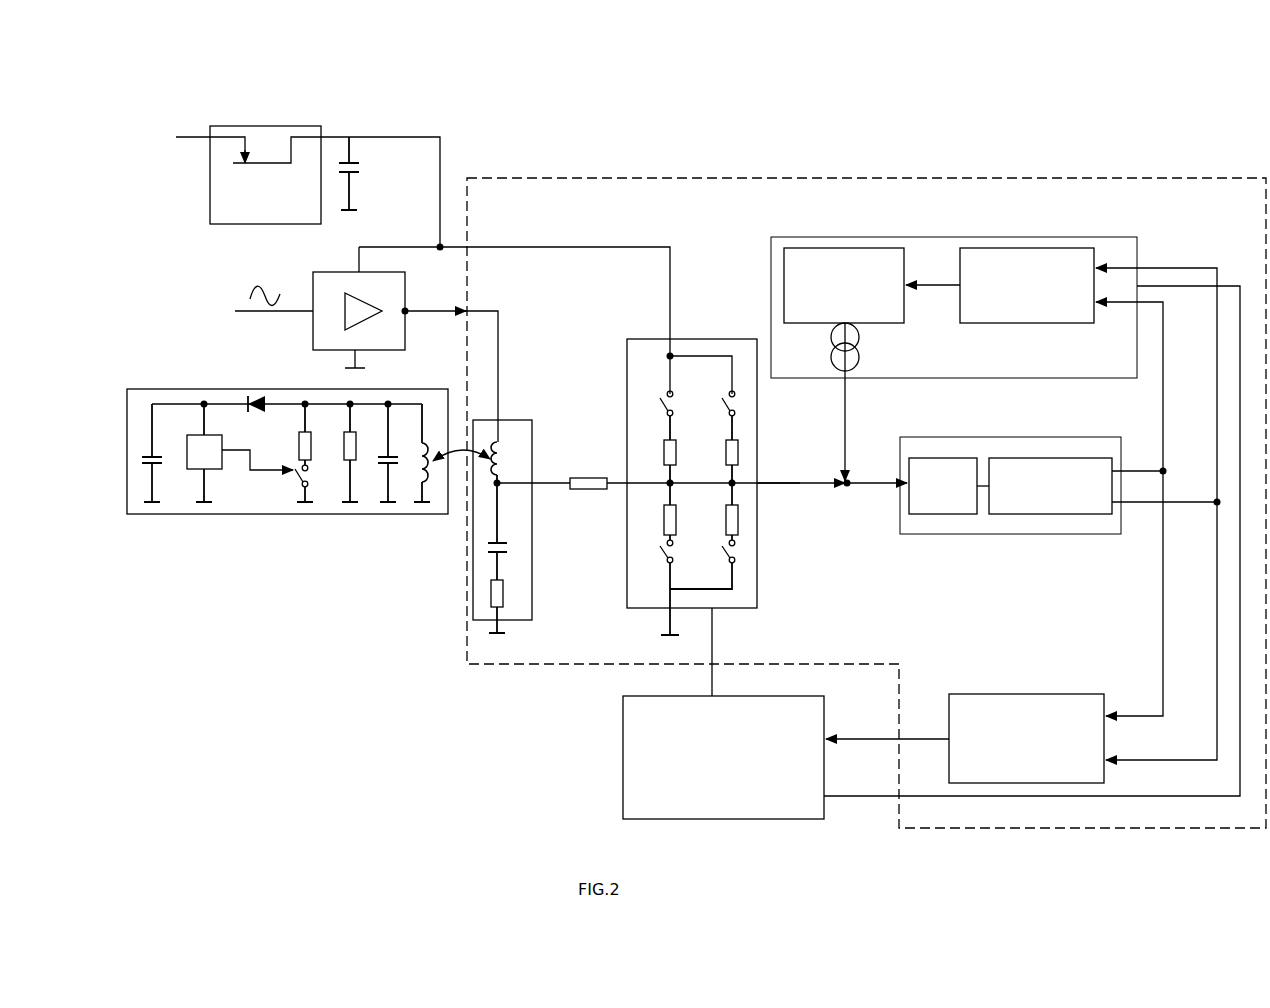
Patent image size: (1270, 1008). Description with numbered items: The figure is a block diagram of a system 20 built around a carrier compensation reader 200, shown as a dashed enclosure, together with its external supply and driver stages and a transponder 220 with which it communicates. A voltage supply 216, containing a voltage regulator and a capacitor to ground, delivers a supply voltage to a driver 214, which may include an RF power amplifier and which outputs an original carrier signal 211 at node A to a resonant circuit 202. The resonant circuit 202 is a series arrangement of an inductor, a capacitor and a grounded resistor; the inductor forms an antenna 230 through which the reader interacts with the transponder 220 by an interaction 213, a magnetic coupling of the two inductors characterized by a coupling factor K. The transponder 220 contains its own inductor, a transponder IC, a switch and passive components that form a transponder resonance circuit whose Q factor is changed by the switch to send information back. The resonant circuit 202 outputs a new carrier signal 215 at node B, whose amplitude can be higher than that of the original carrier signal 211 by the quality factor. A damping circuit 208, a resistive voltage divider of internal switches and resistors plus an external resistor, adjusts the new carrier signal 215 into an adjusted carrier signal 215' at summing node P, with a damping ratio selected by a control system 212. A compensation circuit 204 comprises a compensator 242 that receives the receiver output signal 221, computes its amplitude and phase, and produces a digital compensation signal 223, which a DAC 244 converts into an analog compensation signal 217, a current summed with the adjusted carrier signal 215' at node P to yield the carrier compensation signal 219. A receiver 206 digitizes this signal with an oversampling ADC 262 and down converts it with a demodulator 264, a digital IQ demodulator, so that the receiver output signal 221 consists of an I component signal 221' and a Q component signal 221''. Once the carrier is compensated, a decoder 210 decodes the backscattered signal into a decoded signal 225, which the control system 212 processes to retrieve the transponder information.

The system 20 is at (204, 97).
The voltage supply 216 is at (271, 124).
The carrier compensation reader 200 is at (614, 177).
The compensation circuit 204 is at (954, 333).
The digital compensation signal 223 is at (933, 271).
The digital-to-analog converter 244 is at (881, 327).
The compensator 242 is at (1032, 326).
The compensation signal 217 is at (851, 411).
The driver 214 is at (309, 333).
The original carrier signal 211 is at (450, 365).
The resonant circuit 202 is at (528, 505).
The antenna 230 is at (509, 459).
The interaction 213 is at (461, 456).
The new carrier signal 215 is at (671, 507).
The adjusted carrier signal 215' is at (787, 456).
The carrier compensation signal 219 is at (877, 479).
The damping circuit 208 is at (761, 554).
The receiver 206 is at (1010, 516).
The analog-to-digital converter 262 is at (939, 516).
The demodulator 264 is at (1069, 516).
The receiver output signal 221 is at (1166, 477).
The I component signal 221' is at (1139, 458).
The Q component signal 221'' is at (1166, 513).
The transponder 220 is at (285, 517).
The decoded signal 225 is at (887, 728).
The decoder 210 is at (1026, 738).
The control system 212 is at (723, 757).